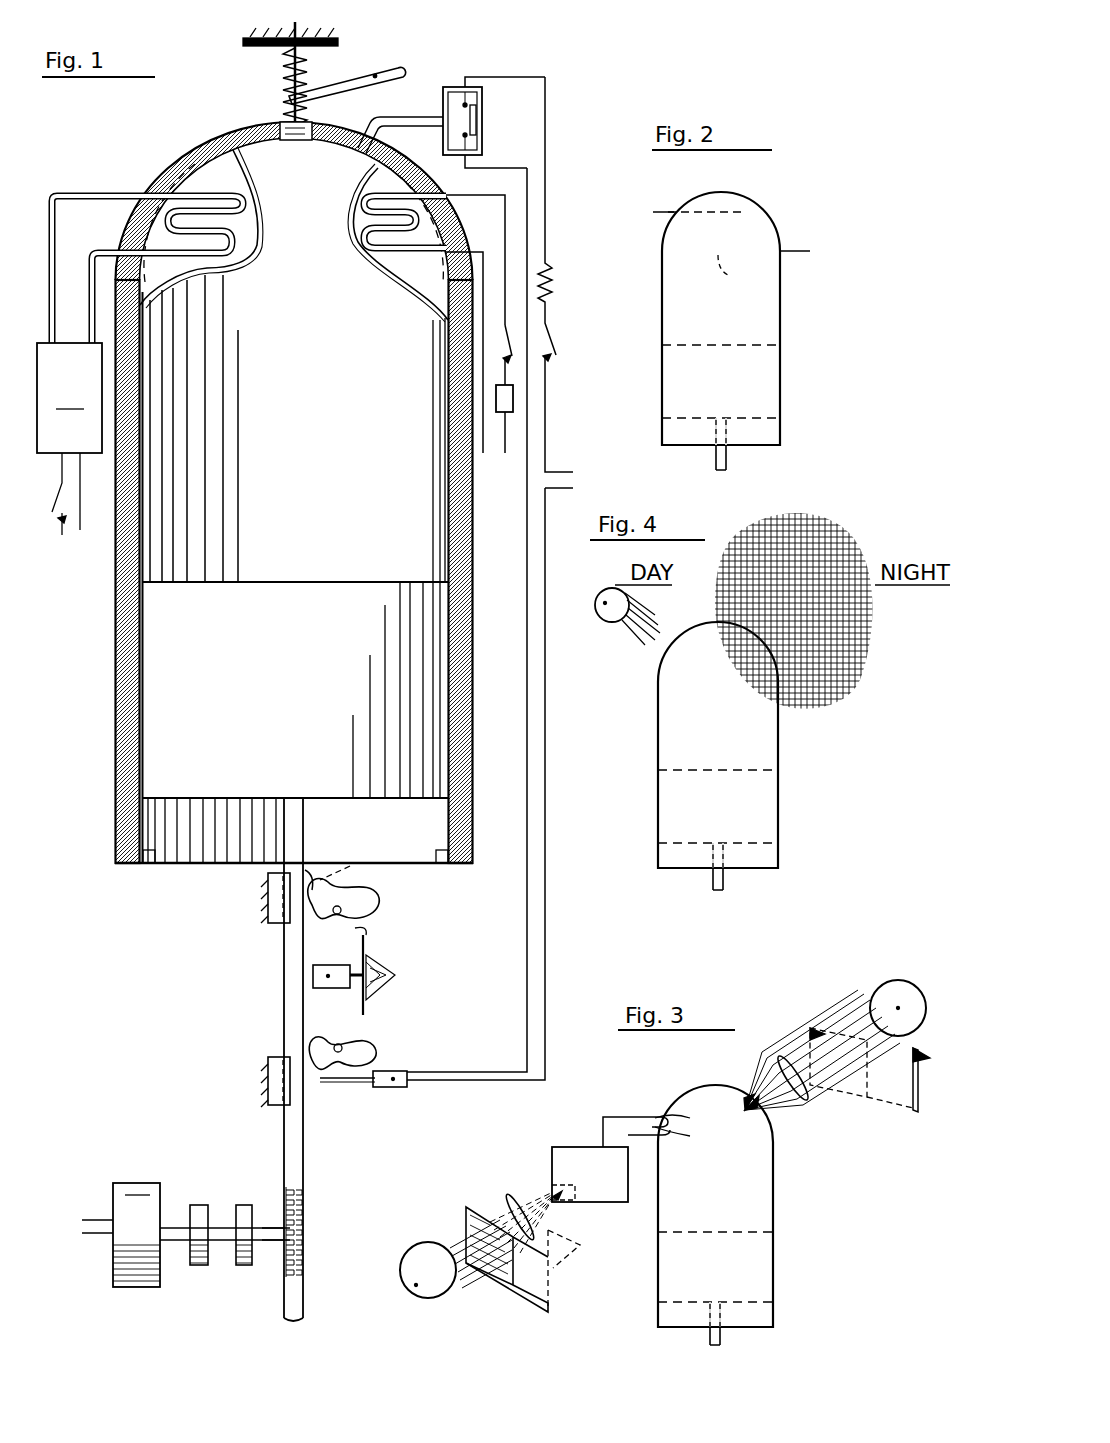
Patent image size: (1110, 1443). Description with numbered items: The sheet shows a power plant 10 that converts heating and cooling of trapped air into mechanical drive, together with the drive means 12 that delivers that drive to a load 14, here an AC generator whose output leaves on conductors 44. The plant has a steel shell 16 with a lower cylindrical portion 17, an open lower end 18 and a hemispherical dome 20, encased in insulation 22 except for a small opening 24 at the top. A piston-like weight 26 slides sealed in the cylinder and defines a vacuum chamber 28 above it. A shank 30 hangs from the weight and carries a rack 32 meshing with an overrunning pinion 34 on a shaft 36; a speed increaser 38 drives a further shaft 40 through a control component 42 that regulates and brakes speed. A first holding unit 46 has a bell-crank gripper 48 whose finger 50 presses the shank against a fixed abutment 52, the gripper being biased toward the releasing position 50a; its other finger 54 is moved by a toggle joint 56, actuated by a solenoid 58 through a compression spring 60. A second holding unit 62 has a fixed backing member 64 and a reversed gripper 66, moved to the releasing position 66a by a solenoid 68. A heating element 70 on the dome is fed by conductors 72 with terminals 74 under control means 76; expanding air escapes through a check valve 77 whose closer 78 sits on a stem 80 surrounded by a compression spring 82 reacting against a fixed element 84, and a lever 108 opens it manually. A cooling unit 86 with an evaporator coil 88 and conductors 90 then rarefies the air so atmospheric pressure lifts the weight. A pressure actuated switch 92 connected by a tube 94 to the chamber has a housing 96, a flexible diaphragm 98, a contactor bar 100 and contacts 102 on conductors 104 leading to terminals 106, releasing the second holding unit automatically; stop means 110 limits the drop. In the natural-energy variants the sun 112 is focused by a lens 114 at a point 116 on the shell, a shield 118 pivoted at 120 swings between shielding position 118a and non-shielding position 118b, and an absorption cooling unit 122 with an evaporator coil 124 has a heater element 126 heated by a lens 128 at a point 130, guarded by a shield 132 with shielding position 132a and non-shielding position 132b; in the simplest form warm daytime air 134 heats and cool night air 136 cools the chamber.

In FIG. 1, the power plant 10 is at (178, 155).
In FIG. 2, the power plant 10 is at (788, 312).
In FIG. 4, the power plant 10 is at (795, 776).
In FIG. 3, the power plant 10 is at (786, 1219).
In FIG. 1, the drive means 12 is at (312, 1236).
In FIG. 1, the load 14 is at (130, 1183).
In FIG. 1, the shell 16 is at (116, 636).
In FIG. 1, the lower cylindrical portion 17 is at (130, 678).
In FIG. 1, the open lower end 18 is at (192, 863).
In FIG. 1, the dome 20 is at (225, 170).
In FIG. 1, the insulation 22 is at (190, 168).
In FIG. 1, the opening 24 is at (284, 122).
In FIG. 1, the weight 26 is at (308, 580).
In FIG. 2, the weight 26 is at (735, 345).
In FIG. 4, the weight 26 is at (730, 770).
In FIG. 3, the weight 26 is at (735, 1232).
In FIG. 1, the vacuum chamber 28 is at (308, 466).
In FIG. 2, the vacuum chamber 28 is at (672, 242).
In FIG. 4, the vacuum chamber 28 is at (706, 668).
In FIG. 1, the shank 30 is at (284, 1000).
In FIG. 2, the shank 30 is at (728, 455).
In FIG. 4, the shank 30 is at (726, 890).
In FIG. 3, the shank 30 is at (723, 1345).
In FIG. 1, the rack 32 is at (305, 1212).
In FIG. 1, the pinion 34 is at (304, 1285).
In FIG. 1, the shaft 36 is at (268, 1243).
In FIG. 1, the speed increaser 38 is at (247, 1266).
In FIG. 1, the shaft 40 is at (224, 1243).
In FIG. 1, the control component 42 is at (196, 1266).
In FIG. 1, the conductors 44 is at (100, 1236).
In FIG. 1, the first holding unit 46 is at (278, 928).
In FIG. 1, the gripper 48 is at (378, 910).
In FIG. 1, the finger 50 is at (308, 870).
In FIG. 1, the releasing position 50a is at (355, 857).
In FIG. 1, the fixed abutment 52 is at (268, 898).
In FIG. 1, the finger 54 is at (378, 912).
In FIG. 1, the toggle joint 56 is at (398, 985).
In FIG. 1, the solenoid 58 is at (328, 968).
In FIG. 1, the compression spring 60 is at (368, 932).
In FIG. 1, the second holding unit 62 is at (376, 1058).
In FIG. 1, the fixed backing member 64 is at (268, 1082).
In FIG. 1, the gripper 66 is at (322, 1045).
In FIG. 1, the releasing position 66a is at (322, 1083).
In FIG. 1, the solenoid 68 is at (395, 1088).
In FIG. 1, the heating element 70 is at (402, 252).
In FIG. 2, the heating element 70 is at (737, 273).
In FIG. 1, the conductors 72 is at (492, 252).
In FIG. 2, the conductors 72 is at (792, 255).
In FIG. 1, the terminals 74 is at (496, 455).
In FIG. 1, the control means 76 is at (498, 398).
In FIG. 1, the check valve 77 is at (278, 148).
In FIG. 1, the closer 78 is at (300, 142).
In FIG. 1, the stem 80 is at (305, 64).
In FIG. 1, the compression spring 82 is at (282, 74).
In FIG. 1, the fixed element 84 is at (325, 38).
In FIG. 1, the cooling unit 86 is at (69, 398).
In FIG. 1, the evaporator coil 88 is at (118, 200).
In FIG. 2, the evaporator coil 88 is at (667, 215).
In FIG. 1, the conductors 90 is at (76, 532).
In FIG. 1, the pressure actuated switch 92 is at (456, 82).
In FIG. 1, the tube 94 is at (414, 117).
In FIG. 1, the housing 96 is at (476, 100).
In FIG. 1, the flexible diaphragm 98 is at (476, 140).
In FIG. 1, the electrical contactor bar 100 is at (478, 123).
In FIG. 1, the electrical contacts 102 is at (464, 106).
In FIG. 1, the conductors 104 is at (538, 215).
In FIG. 1, the terminals 106 is at (568, 478).
In FIG. 1, the lever 108 is at (380, 74).
In FIG. 1, the stop means 110 is at (144, 863).
In FIG. 4, the sun 112 is at (598, 608).
In FIG. 3, the sun 112 is at (898, 1005).
In FIG. 3, the lens 114 is at (788, 1060).
In FIG. 3, the concentration point 116 is at (745, 1112).
In FIG. 3, the shield 118 is at (844, 1096).
In FIG. 3, the shielding position 118a is at (836, 1098).
In FIG. 3, the non-shielding position 118b is at (930, 1068).
In FIG. 3, the pivot 120 is at (912, 1112).
In FIG. 3, the cooling unit 122 is at (600, 1145).
In FIG. 3, the evaporator coil 124 is at (684, 1115).
In FIG. 3, the heater element 126 is at (580, 1203).
In FIG. 3, the lens 128 is at (515, 1200).
In FIG. 3, the concentration point 130 is at (565, 1192).
In FIG. 3, the shield 132 is at (527, 1301).
In FIG. 3, the shielding position 132a is at (495, 1283).
In FIG. 3, the non-shielding position 132b is at (565, 1255).
In FIG. 4, the warm daytime ambient air 134 is at (600, 630).
In FIG. 4, the cool night air 136 is at (866, 654).